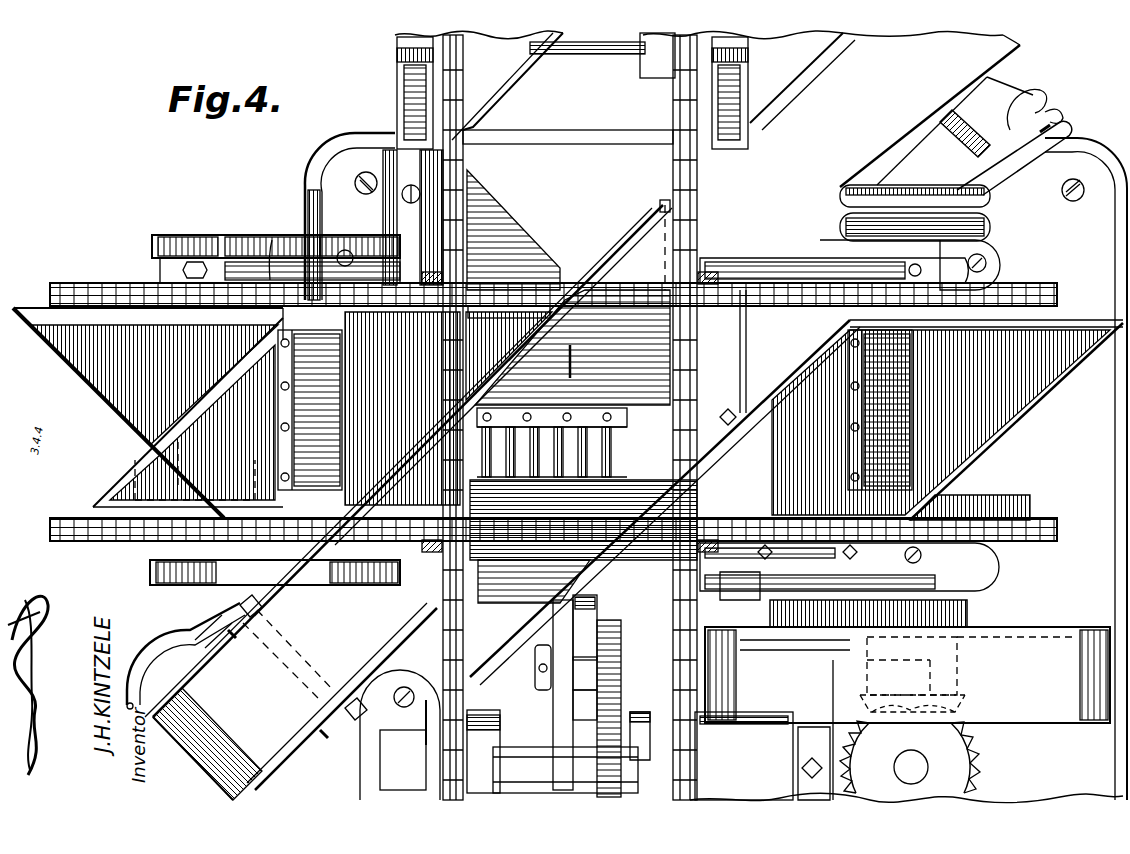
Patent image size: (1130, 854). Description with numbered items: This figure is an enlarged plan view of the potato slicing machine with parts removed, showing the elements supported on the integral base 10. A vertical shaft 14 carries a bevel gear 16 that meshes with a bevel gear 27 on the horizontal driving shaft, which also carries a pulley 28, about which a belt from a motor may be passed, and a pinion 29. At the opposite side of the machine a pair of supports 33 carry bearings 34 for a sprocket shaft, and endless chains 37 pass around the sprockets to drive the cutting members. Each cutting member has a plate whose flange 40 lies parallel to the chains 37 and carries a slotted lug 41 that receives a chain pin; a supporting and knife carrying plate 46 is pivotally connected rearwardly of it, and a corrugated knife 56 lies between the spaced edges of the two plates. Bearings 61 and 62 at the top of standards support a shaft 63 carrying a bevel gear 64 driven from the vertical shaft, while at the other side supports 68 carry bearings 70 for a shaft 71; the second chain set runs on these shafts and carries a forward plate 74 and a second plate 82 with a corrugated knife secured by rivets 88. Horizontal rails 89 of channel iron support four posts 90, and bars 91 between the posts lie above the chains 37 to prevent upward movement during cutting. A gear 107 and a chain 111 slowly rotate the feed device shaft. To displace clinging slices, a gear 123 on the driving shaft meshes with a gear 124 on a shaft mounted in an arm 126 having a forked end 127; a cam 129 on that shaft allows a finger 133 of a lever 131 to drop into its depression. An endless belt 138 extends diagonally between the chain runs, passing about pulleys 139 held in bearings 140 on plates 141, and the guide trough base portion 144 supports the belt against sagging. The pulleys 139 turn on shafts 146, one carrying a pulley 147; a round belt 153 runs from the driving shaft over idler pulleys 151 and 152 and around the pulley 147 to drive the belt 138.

The base 10 is at (345, 160).
The shaft 14 is at (925, 770).
The bevel gear 16 is at (906, 757).
The bevel gear 27 is at (955, 712).
The pulley 28 is at (907, 675).
The pinion 29 is at (967, 613).
The supports 33 is at (262, 238).
The bearings 34 is at (196, 240).
The endless chains 37 is at (106, 282).
The flange 40 is at (445, 380).
The lug 41 is at (485, 315).
The supporting and knife carrying plate 46 is at (147, 473).
The cutting member or knife 56 is at (290, 440).
The bearing 61 is at (400, 735).
The bearing 62 is at (744, 756).
The shaft 63 is at (522, 765).
The bevel gear 64 is at (815, 730).
The supports 68 is at (405, 92).
The bearings 70 is at (397, 55).
The shaft 71 is at (612, 50).
The forward plate 74 is at (490, 612).
The second plate 82 is at (650, 245).
The rivets 88 is at (535, 432).
The horizontal rails 89 is at (274, 240).
The posts 90 is at (420, 285).
The bars 91 is at (772, 285).
The gear 107 is at (830, 630).
The chain 111 is at (768, 592).
The gear 123 is at (622, 752).
The gear 124 is at (622, 660).
The arm 126 is at (553, 710).
The forked end 127 is at (560, 790).
The cam 129 is at (582, 704).
The lever 131 is at (590, 640).
The finger 133 is at (582, 673).
The endless belt 138 is at (295, 697).
The pulleys 139 is at (1005, 78).
The bearings 140 is at (168, 632).
The plates 141 is at (200, 615).
The base portion 144 is at (288, 654).
The shafts 146 is at (1020, 102).
The pulley 147 is at (1045, 108).
The idler pulley 151 is at (993, 232).
The idler pulley 152 is at (993, 205).
The belt 153 is at (1015, 172).